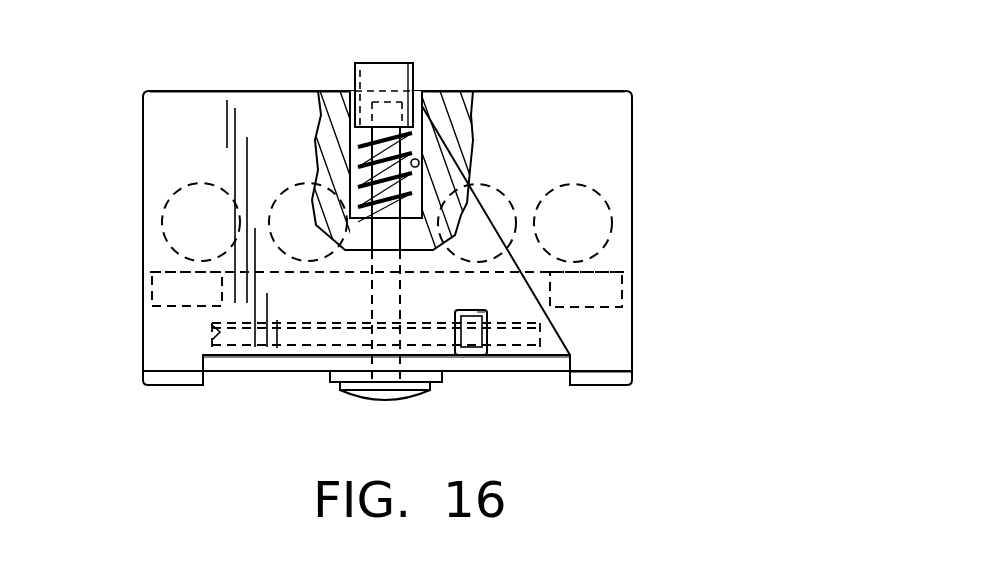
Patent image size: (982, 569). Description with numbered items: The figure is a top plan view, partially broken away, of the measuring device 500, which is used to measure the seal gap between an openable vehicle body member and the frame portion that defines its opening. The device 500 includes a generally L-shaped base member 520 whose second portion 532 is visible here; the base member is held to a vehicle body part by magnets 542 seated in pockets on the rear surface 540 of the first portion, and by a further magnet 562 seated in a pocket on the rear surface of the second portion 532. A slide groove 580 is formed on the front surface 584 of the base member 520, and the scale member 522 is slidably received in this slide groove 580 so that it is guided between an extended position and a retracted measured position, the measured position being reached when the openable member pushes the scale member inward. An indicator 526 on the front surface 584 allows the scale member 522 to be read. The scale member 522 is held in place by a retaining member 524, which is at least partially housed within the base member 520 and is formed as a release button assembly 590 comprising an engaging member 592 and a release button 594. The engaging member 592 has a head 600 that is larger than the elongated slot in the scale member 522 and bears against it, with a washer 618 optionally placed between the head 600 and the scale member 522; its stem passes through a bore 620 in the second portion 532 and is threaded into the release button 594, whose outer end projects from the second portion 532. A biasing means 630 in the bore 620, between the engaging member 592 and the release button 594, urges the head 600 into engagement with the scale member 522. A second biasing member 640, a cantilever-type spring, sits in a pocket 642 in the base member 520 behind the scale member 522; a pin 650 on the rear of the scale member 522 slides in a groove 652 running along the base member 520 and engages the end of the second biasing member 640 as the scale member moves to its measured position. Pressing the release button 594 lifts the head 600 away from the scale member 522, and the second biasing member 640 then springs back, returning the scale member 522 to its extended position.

The device 500 is at (732, 246).
The base member 520 is at (640, 328).
The scale member 522 is at (248, 376).
The retaining member 524 is at (418, 402).
The indicator 526 is at (165, 385).
The second portion 532 is at (614, 130).
The rear surface 540 is at (530, 273).
The magnet 542 is at (160, 288).
The magnet 562 is at (152, 178).
The slide groove 580 is at (553, 365).
The front surface 584 is at (617, 385).
The release button assembly 590 is at (352, 88).
The engaging member 592 is at (354, 400).
The release button 594 is at (402, 70).
The head 600 is at (388, 394).
The washer 618 is at (330, 373).
The bore 620 is at (420, 162).
The biasing means 630 is at (338, 188).
The second biasing member 640 is at (230, 365).
The pocket 642 is at (215, 328).
The pin 650 is at (470, 345).
The groove 652 is at (477, 310).